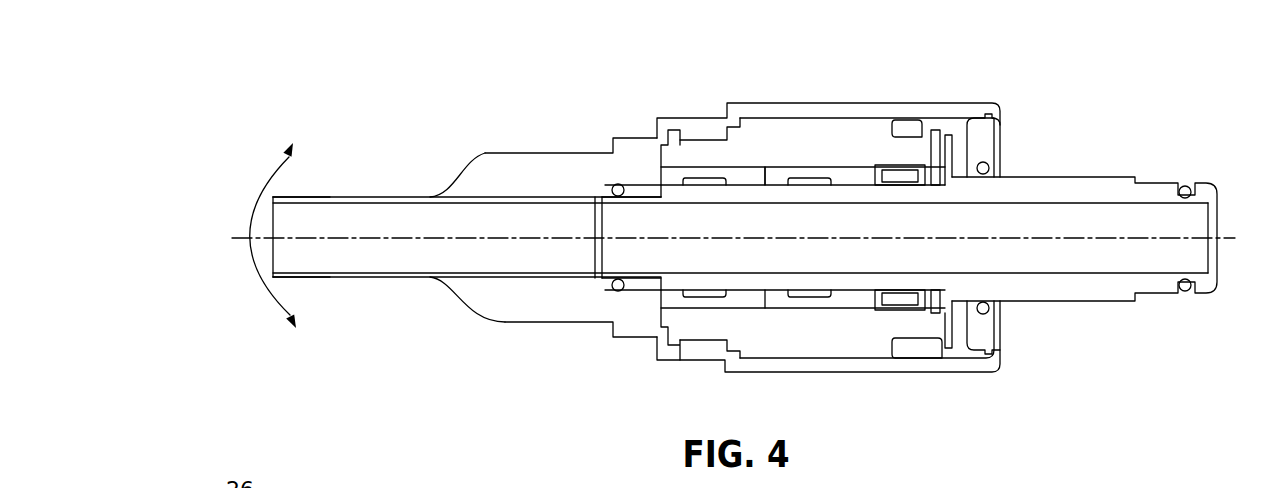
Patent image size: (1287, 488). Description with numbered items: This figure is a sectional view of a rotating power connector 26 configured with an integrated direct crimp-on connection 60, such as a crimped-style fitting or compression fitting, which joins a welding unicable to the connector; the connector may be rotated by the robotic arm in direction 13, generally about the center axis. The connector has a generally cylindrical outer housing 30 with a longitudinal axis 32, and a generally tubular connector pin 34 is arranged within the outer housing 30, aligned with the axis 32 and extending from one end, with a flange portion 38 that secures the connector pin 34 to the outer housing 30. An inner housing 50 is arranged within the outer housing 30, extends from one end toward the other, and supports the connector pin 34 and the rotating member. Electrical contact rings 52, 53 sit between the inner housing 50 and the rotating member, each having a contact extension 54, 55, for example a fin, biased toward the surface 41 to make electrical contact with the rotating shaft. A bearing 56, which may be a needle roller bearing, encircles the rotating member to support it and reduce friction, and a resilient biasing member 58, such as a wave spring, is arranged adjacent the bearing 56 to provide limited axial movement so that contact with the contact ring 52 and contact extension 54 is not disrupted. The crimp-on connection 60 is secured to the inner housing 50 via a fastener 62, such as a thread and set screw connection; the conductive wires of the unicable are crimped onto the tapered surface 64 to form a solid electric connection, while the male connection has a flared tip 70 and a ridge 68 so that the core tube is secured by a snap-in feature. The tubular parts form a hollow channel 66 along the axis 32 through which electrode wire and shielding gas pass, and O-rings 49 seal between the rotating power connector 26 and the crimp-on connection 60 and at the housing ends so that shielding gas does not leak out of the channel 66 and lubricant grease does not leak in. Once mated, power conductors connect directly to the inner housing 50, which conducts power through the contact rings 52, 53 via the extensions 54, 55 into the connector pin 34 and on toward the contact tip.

The rotating power connector 26 is at (293, 77).
The direction 13 is at (258, 181).
The outer housing 30 is at (841, 103).
The longitudinal axis 32 is at (373, 251).
The connector pin 34 is at (1086, 176).
The flange portion 38 is at (960, 130).
The surface 41 is at (746, 305).
The O-rings 49 is at (617, 170).
The inner housing 50 is at (762, 118).
The electrical contact ring 52 is at (812, 165).
The electrical contact ring 53 is at (718, 167).
The contact extension 54 is at (811, 305).
The contact extension 55 is at (705, 307).
The bearing 56 is at (894, 152).
The resilient biasing member 58 is at (932, 147).
The direct crimp-on connection 60 is at (446, 161).
The fastener 62 is at (664, 117).
The tapered surface 64 is at (556, 152).
The hollow channel 66 is at (548, 322).
The ridge 68 is at (311, 189).
The flared tip 70 is at (294, 289).